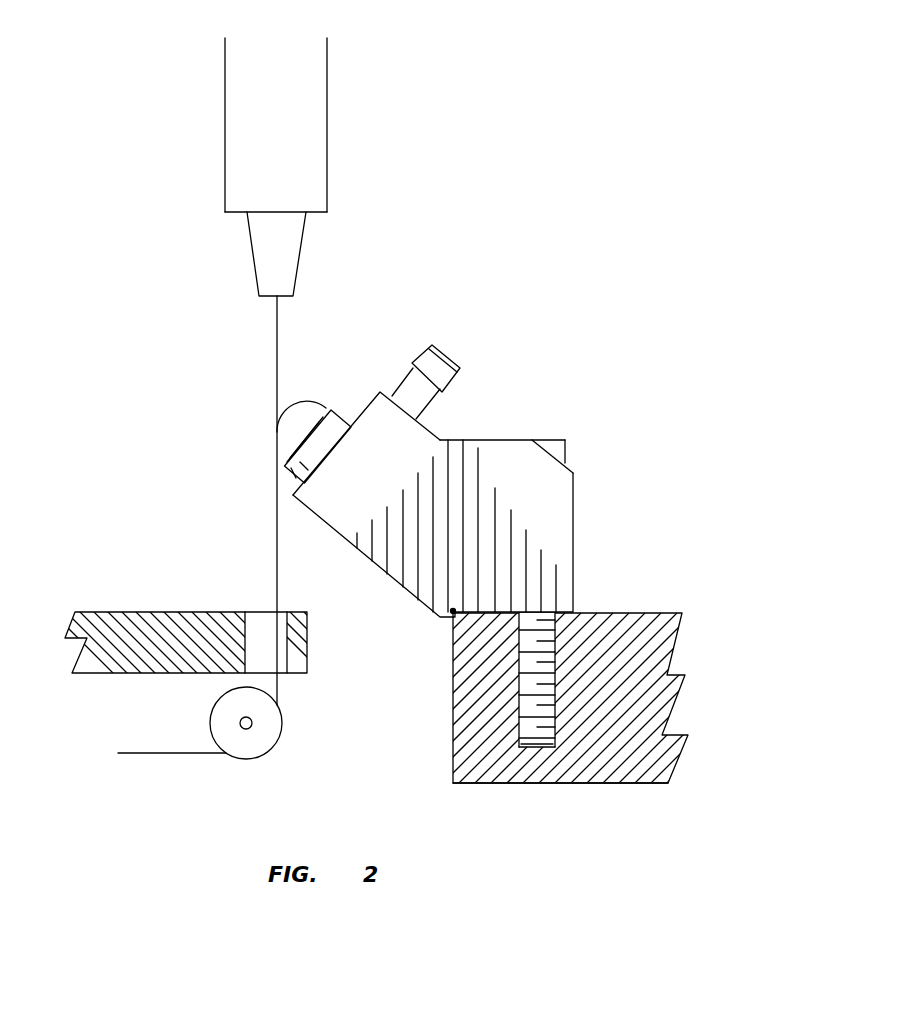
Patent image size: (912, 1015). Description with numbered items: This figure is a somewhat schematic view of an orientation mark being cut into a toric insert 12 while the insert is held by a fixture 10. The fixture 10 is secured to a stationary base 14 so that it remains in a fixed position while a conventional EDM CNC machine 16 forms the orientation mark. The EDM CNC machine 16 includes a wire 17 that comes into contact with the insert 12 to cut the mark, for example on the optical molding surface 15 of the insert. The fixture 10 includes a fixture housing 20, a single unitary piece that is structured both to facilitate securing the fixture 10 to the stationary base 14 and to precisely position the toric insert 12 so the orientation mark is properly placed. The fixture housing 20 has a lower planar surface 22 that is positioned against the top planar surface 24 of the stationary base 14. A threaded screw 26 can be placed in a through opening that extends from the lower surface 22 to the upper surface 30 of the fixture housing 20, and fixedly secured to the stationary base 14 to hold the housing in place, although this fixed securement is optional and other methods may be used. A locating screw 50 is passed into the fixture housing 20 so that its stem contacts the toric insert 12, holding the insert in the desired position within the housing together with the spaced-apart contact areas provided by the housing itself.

The fixture 10 is at (608, 510).
The toric insert 12 is at (348, 385).
The stationary base 14 is at (631, 799).
The optical molding surface 15 is at (277, 425).
The EDM CNC machine 16 is at (210, 228).
The wire 17 is at (277, 357).
The fixture housing 20 is at (468, 448).
The lower planar surface 22 is at (453, 611).
The top planar surface 24 is at (612, 611).
The threaded screw 26 is at (567, 447).
The upper surface 30 is at (497, 438).
The locating screw 50 is at (428, 353).